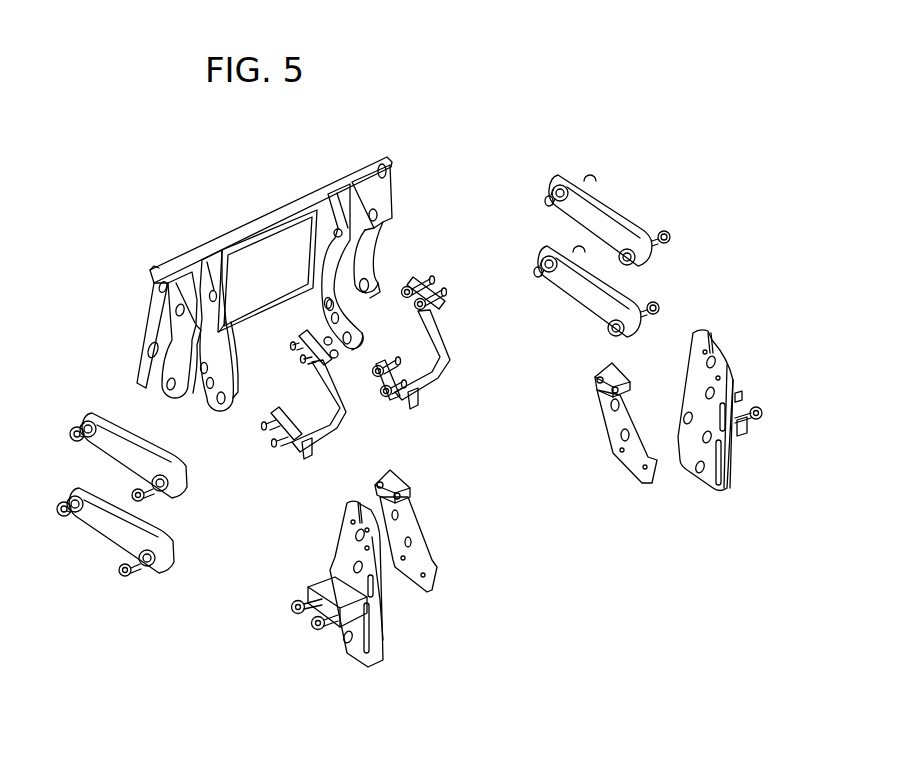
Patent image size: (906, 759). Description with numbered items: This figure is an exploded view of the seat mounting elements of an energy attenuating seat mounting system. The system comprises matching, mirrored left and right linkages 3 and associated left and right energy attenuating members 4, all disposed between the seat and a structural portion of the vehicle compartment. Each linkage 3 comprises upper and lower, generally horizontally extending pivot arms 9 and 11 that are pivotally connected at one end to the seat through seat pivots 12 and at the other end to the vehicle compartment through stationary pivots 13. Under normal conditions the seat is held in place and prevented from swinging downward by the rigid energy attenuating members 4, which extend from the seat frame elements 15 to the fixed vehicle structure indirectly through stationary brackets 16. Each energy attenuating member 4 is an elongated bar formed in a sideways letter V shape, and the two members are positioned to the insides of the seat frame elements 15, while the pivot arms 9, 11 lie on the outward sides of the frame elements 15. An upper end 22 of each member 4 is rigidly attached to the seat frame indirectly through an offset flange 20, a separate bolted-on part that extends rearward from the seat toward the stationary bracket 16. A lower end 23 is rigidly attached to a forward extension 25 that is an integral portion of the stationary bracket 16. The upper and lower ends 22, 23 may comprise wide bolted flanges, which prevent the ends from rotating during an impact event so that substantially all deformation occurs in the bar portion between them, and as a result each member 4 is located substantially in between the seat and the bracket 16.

The linkage 3 is at (60, 343).
The energy attenuating member 4 is at (385, 351).
The upper pivot arm 9 is at (170, 380).
The lower pivot arm 11 is at (125, 535).
The seat pivot 12 is at (543, 505).
The stationary pivot 13 is at (328, 305).
The seat frame element 15 is at (737, 453).
The stationary bracket 16 is at (348, 170).
The offset flange 20 is at (437, 582).
The upper end 22 is at (433, 292).
The lower end 23 is at (410, 403).
The forward extension 25 is at (213, 398).